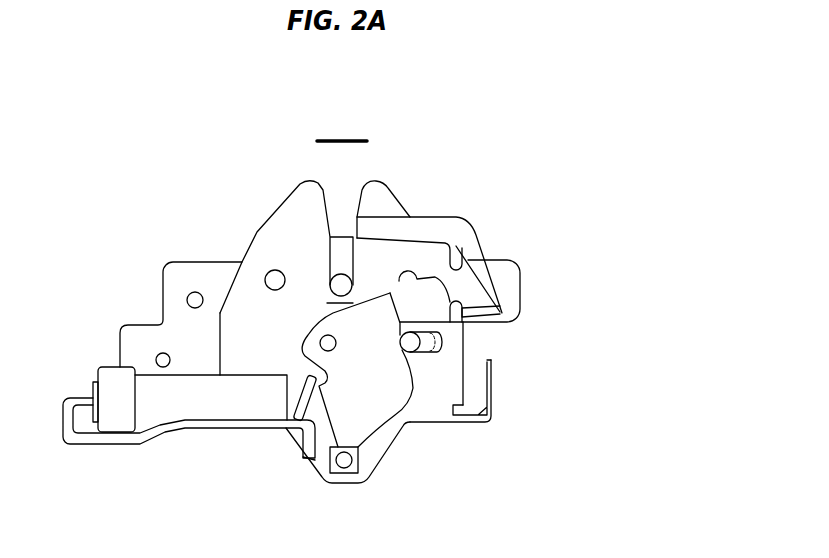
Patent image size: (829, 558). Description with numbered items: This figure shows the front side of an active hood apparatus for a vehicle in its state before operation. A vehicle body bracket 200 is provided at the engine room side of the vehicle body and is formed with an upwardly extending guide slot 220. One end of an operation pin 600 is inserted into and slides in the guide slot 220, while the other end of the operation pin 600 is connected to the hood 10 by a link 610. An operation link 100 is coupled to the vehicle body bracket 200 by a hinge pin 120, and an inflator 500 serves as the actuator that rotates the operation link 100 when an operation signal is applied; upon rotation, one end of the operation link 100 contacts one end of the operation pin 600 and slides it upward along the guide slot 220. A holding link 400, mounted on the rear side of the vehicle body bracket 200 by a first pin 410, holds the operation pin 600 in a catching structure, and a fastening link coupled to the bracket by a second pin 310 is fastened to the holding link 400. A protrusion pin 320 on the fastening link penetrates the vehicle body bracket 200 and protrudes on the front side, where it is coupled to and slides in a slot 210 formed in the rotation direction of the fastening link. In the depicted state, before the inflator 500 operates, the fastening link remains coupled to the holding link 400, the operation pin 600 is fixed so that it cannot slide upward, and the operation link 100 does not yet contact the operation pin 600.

The hood 10 is at (364, 138).
The operation link 100 is at (503, 244).
The hinge pin 120 is at (322, 347).
The vehicle body bracket 200 is at (484, 395).
The slot 210 is at (442, 340).
The guide slot 220 is at (340, 218).
The second pin 310 is at (500, 315).
The protrusion pin 320 is at (408, 350).
The holding link 400 is at (340, 242).
The first pin 410 is at (275, 280).
The inflator 500 is at (153, 403).
The operation pin 600 is at (341, 285).
The link 610 is at (333, 153).